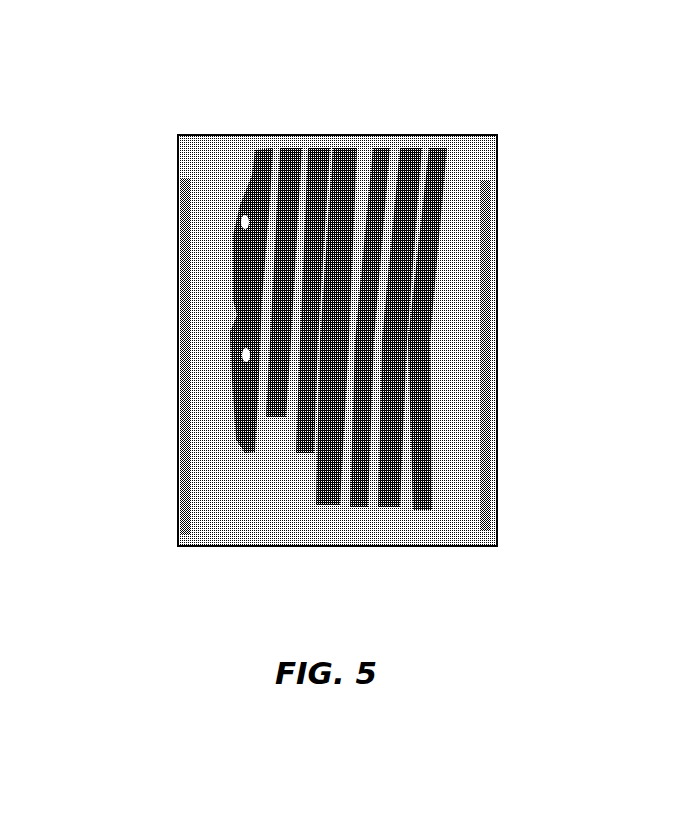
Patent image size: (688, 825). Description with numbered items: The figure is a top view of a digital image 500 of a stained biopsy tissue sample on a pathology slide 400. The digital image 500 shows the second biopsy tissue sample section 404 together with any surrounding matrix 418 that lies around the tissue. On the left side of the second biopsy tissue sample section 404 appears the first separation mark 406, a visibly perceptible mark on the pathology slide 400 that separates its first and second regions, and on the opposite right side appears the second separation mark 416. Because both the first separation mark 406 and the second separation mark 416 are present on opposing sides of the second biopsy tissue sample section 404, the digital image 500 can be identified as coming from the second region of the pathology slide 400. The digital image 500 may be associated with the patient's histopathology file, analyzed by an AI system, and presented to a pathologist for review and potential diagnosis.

The digital image 500 is at (136, 86).
The pathology slide 400 is at (232, 528).
The second biopsy tissue sample section 404 is at (366, 185).
The first separation mark 406 is at (181, 350).
The second separation mark 416 is at (484, 372).
The surrounding matrix 418 is at (433, 433).